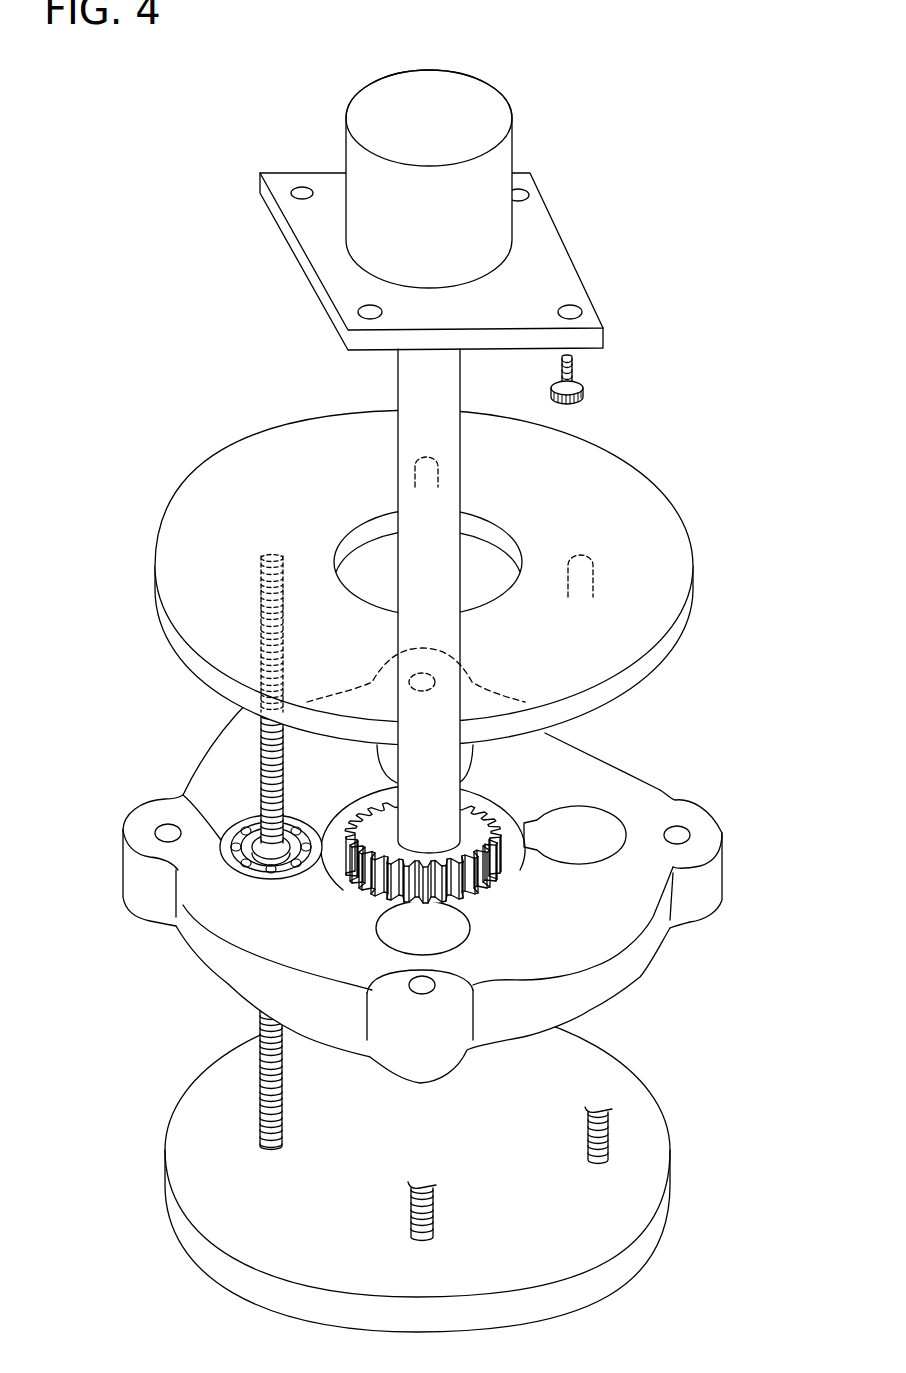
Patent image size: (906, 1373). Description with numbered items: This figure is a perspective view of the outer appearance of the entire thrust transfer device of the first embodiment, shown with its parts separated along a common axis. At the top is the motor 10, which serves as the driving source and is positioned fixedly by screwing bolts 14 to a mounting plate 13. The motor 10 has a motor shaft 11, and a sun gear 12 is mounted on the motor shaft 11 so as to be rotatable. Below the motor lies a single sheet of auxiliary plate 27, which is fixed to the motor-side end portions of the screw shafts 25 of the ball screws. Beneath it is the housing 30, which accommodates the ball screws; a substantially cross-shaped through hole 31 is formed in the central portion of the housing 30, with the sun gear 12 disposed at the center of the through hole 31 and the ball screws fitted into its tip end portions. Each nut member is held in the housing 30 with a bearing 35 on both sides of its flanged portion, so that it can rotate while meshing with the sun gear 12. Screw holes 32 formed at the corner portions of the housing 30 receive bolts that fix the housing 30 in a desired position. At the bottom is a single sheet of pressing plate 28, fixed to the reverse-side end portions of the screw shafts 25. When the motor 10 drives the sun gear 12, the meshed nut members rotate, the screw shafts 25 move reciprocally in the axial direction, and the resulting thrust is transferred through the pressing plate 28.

The motor 10 is at (353, 163).
The motor shaft 11 is at (405, 380).
The sun gear 12 is at (493, 880).
The mounting plate 13 is at (592, 315).
The bolt 14 is at (585, 392).
The screw shaft 25 is at (258, 1120).
The auxiliary plate 27 is at (160, 557).
The pressing plate 28 is at (167, 1193).
The housing 30 is at (722, 883).
The through hole 31 is at (505, 837).
The screw hole 32 is at (156, 831).
The bearing 35 is at (183, 795).